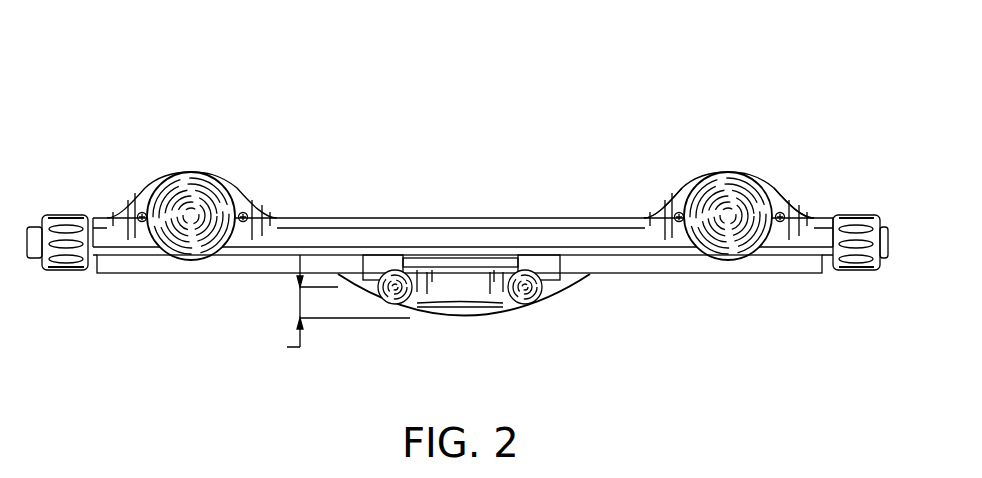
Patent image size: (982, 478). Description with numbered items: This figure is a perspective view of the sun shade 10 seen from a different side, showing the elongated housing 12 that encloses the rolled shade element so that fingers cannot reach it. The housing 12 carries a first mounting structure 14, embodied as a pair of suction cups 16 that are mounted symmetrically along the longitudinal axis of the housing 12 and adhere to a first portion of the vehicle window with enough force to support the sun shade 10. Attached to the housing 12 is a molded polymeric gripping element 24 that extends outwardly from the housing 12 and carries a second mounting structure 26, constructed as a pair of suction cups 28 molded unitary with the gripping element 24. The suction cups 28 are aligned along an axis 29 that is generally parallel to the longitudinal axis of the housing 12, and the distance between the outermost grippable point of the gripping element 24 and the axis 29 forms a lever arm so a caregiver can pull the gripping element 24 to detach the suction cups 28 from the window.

The sun shade 10 is at (457, 235).
The housing 12 is at (590, 218).
The first mounting structure 14 is at (763, 96).
The suction cups 16 is at (188, 172).
The gripping element 24 is at (462, 318).
The second mounting structure 26 is at (420, 232).
The suction cups 28 is at (390, 304).
The axis 29 is at (233, 274).